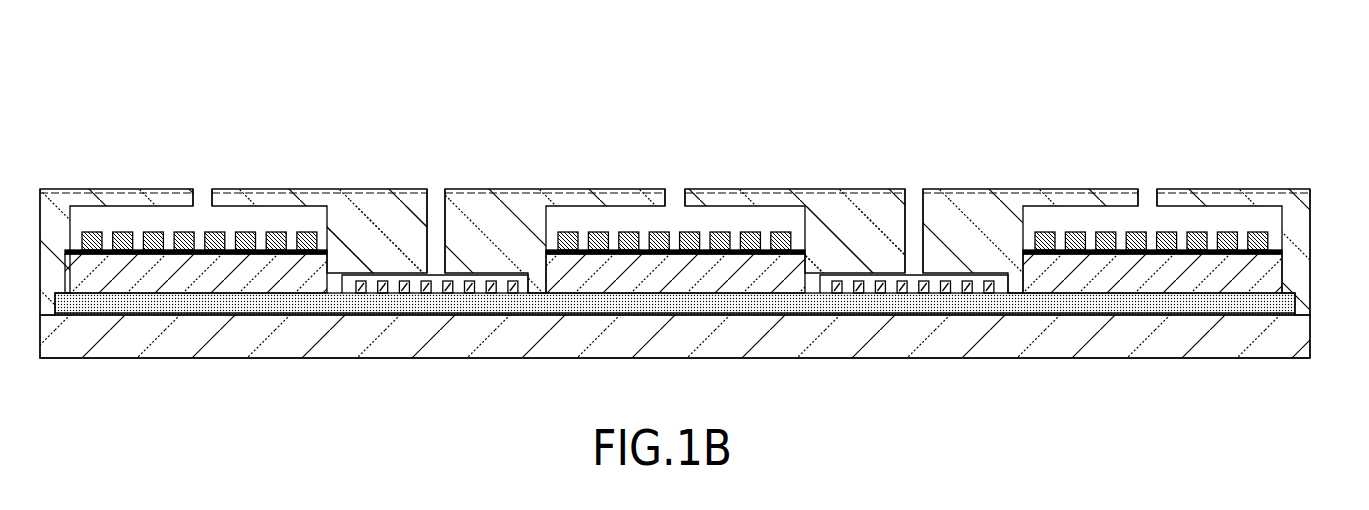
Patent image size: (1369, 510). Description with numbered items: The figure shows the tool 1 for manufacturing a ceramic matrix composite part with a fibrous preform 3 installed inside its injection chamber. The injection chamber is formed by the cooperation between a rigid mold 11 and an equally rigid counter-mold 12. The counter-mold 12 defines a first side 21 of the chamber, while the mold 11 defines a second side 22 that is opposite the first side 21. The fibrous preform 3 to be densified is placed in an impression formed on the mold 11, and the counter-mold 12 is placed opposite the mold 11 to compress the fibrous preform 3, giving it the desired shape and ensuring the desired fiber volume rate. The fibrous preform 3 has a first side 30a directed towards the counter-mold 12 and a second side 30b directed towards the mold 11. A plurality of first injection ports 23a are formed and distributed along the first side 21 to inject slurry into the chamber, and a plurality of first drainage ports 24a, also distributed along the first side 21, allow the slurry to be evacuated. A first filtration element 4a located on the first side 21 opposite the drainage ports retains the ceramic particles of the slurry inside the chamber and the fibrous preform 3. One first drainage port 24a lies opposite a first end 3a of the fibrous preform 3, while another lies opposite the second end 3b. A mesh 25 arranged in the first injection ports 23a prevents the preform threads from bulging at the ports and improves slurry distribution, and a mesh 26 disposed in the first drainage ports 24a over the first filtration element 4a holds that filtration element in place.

The tool 1 is at (239, 106).
The fibrous preform 3 is at (767, 305).
The first end of the fibrous preform 3a is at (1287, 304).
The second end of the fibrous preform 3b is at (64, 305).
The first filtration element 4a is at (172, 275).
The mold 11 is at (1238, 345).
The counter-mold 12 is at (1305, 218).
The first side of the injection chamber 21 is at (345, 310).
The second side of the injection chamber 22 is at (228, 303).
The first injection ports 23a is at (436, 187).
The first drainage ports 24a is at (201, 187).
The mesh 25 is at (445, 288).
The mesh 26 is at (120, 232).
The first side of the fibrous preform 30a is at (857, 303).
The second side of the fibrous preform 30b is at (832, 290).